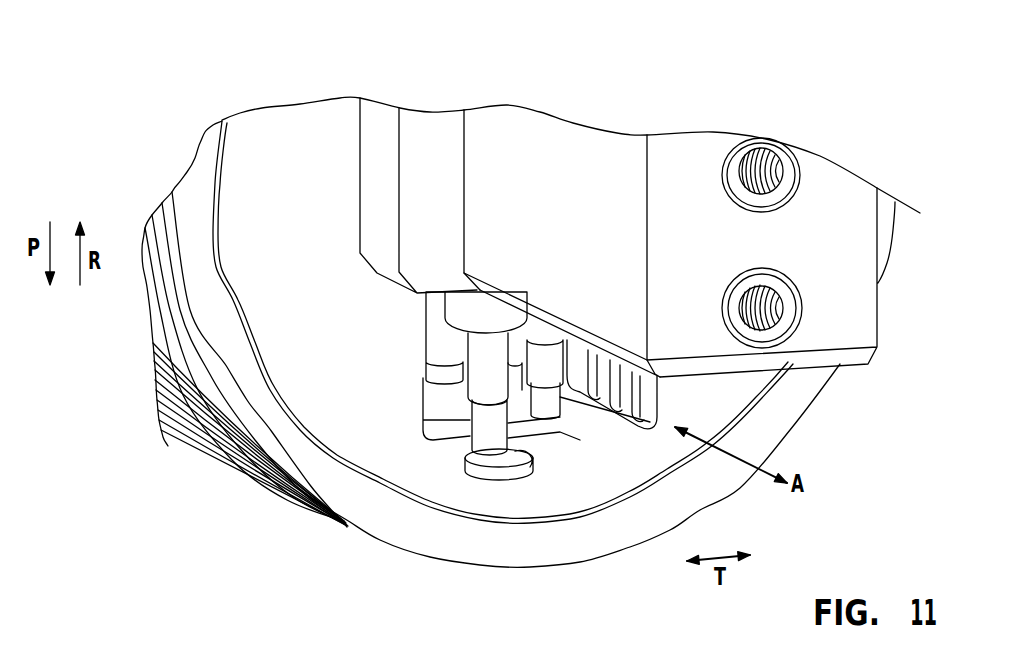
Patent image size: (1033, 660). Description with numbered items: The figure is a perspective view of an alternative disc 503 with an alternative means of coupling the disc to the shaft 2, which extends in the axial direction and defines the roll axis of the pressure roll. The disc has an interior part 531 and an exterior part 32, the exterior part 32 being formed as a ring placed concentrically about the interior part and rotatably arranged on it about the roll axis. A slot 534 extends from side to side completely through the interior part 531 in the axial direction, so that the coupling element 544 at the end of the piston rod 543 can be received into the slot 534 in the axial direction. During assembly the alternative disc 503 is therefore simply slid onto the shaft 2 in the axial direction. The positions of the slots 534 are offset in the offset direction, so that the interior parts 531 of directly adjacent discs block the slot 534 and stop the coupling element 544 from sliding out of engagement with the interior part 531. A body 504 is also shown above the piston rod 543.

The shaft 2 is at (853, 311).
The exterior part 32 is at (362, 515).
The alternative disc 503 is at (287, 132).
The upper cylindrical body 504 is at (471, 315).
The interior part 531 is at (323, 413).
The slot 534 is at (425, 414).
The piston rod 543 is at (480, 363).
The coupling element 544 is at (477, 470).